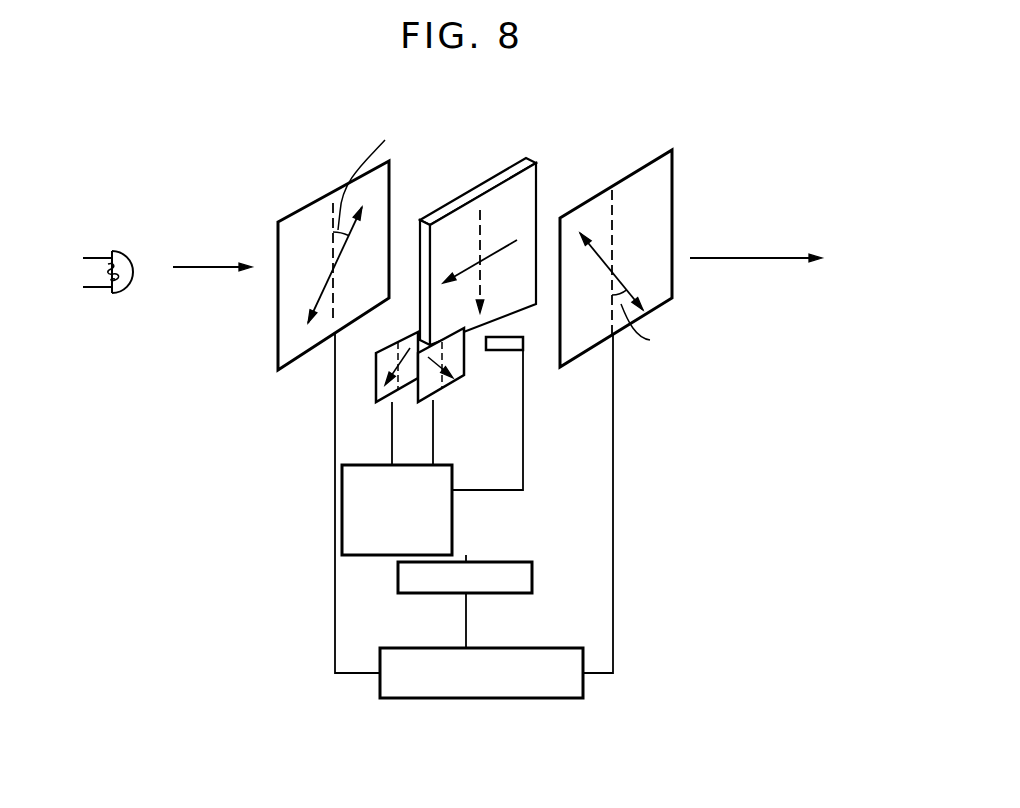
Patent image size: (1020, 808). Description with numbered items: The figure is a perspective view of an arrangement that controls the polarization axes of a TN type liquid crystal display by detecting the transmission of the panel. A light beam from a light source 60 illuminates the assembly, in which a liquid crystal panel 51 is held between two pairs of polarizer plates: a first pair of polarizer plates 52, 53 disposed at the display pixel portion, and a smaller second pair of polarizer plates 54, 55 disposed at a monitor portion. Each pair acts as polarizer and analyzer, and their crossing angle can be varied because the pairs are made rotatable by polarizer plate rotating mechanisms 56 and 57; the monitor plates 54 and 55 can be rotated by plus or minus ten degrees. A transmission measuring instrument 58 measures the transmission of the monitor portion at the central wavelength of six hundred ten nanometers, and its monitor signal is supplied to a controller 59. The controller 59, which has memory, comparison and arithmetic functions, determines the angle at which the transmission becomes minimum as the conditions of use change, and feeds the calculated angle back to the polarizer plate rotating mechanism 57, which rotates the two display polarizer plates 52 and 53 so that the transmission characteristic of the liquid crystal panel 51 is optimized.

The liquid crystal panel 51 is at (458, 198).
The polarizer plate 52 is at (317, 199).
The polarizer plate 53 is at (602, 190).
The polarizer plate 54 is at (376, 376).
The polarizer plate 55 is at (466, 360).
The polarizer plate rotating mechanism 56 is at (452, 480).
The polarizer plate rotating mechanism 57 is at (420, 700).
The transmission measuring instrument 58 is at (523, 350).
The controller 59 is at (533, 575).
The light source 60 is at (133, 250).